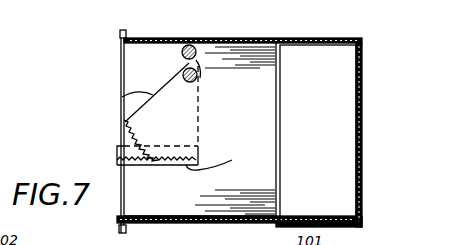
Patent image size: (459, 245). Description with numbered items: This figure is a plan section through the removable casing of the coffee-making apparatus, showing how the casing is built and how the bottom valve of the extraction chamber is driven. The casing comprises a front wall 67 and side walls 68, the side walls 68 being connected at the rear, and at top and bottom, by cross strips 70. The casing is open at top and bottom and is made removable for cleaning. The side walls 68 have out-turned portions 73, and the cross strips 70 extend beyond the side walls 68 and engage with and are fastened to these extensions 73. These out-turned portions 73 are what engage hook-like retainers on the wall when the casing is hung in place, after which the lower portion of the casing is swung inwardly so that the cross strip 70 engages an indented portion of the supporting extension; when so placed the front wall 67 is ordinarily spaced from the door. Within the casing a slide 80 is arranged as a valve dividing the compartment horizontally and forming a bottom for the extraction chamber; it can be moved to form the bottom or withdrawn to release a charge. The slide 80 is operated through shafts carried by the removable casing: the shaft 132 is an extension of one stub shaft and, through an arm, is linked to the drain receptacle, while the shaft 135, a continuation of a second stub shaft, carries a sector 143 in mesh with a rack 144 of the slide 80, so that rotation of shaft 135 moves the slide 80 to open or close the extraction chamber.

The front wall 67 is at (363, 100).
The side walls 68 is at (308, 38).
The cross strips 70 is at (122, 107).
The out-turned portions 73 is at (127, 34).
The slide 80 is at (143, 198).
The shaft 132 is at (192, 44).
The shaft 135 is at (198, 76).
The sector 143 is at (122, 97).
The rack 144 is at (189, 160).